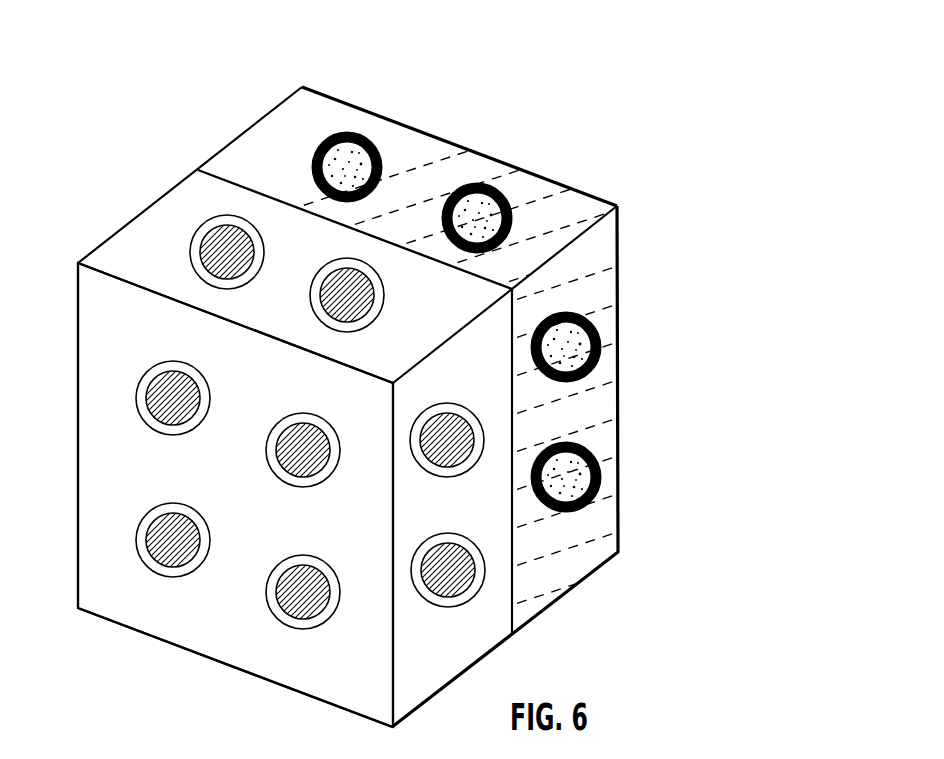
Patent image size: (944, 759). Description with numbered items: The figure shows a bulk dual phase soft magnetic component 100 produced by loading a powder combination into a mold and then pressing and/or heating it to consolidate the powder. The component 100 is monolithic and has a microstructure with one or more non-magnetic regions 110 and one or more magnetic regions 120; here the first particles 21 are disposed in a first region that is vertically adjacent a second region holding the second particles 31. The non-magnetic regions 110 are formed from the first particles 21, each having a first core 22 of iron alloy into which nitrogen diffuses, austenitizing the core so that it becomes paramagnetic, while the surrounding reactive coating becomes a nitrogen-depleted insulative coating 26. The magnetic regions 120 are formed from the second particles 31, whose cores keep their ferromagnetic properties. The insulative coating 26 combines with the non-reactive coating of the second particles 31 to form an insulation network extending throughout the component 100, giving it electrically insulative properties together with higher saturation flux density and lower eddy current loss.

The bulk dual phase soft magnetic component 100 is at (145, 123).
The magnetic regions 120 is at (102, 315).
The non-magnetic regions 110 is at (565, 222).
The first particles 21 is at (485, 180).
The nitrogen-depleted insulative coating 26 is at (597, 323).
The first core 22 is at (573, 355).
The second particles 31 is at (152, 575).